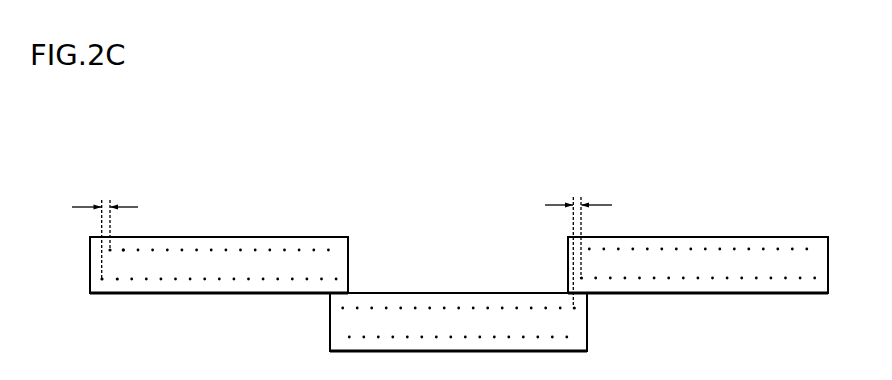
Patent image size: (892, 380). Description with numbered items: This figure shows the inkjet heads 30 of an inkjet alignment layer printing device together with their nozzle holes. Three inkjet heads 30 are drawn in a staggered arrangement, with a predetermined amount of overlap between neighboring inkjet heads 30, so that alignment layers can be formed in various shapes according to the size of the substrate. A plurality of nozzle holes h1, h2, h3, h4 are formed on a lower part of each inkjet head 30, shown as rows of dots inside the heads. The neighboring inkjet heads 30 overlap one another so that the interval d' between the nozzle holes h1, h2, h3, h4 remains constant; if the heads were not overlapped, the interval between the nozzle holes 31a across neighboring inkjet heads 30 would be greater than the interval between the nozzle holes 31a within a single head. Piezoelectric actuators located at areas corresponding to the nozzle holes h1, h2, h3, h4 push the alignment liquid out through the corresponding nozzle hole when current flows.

The inkjet head 30 is at (228, 237).
The nozzle hole 31a is at (582, 279).
The nozzle hole h1 is at (100, 279).
The nozzle hole h2 is at (107, 250).
The nozzle hole h3 is at (115, 282).
The nozzle hole h4 is at (123, 252).
The interval between nozzle holes d' is at (342, 245).